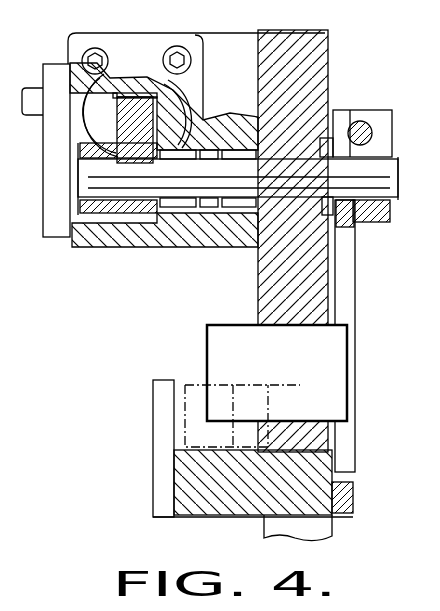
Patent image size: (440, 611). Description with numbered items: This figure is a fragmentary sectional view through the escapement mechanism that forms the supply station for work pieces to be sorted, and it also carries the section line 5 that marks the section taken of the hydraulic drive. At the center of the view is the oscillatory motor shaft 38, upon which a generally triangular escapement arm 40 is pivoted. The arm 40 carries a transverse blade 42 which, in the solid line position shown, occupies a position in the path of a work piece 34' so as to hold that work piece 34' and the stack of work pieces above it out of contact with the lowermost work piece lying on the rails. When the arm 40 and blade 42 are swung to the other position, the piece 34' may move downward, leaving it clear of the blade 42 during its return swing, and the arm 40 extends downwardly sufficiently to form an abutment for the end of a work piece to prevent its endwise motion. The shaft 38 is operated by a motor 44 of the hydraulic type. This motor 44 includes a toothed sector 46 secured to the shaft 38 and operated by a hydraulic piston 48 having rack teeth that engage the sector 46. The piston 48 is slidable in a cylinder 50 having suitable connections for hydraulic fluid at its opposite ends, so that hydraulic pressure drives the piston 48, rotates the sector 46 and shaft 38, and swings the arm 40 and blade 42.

The section line 5- 5 is at (158, 22).
The work piece 34' is at (230, 397).
The oscillatory motor shaft 38 is at (400, 157).
The escapement arm 40 is at (350, 270).
The transverse blade 42 is at (214, 333).
The motor 44 is at (99, 249).
The toothed sector 46 is at (135, 128).
The hydraulic piston 48 is at (140, 86).
The cylinder 50 is at (110, 128).